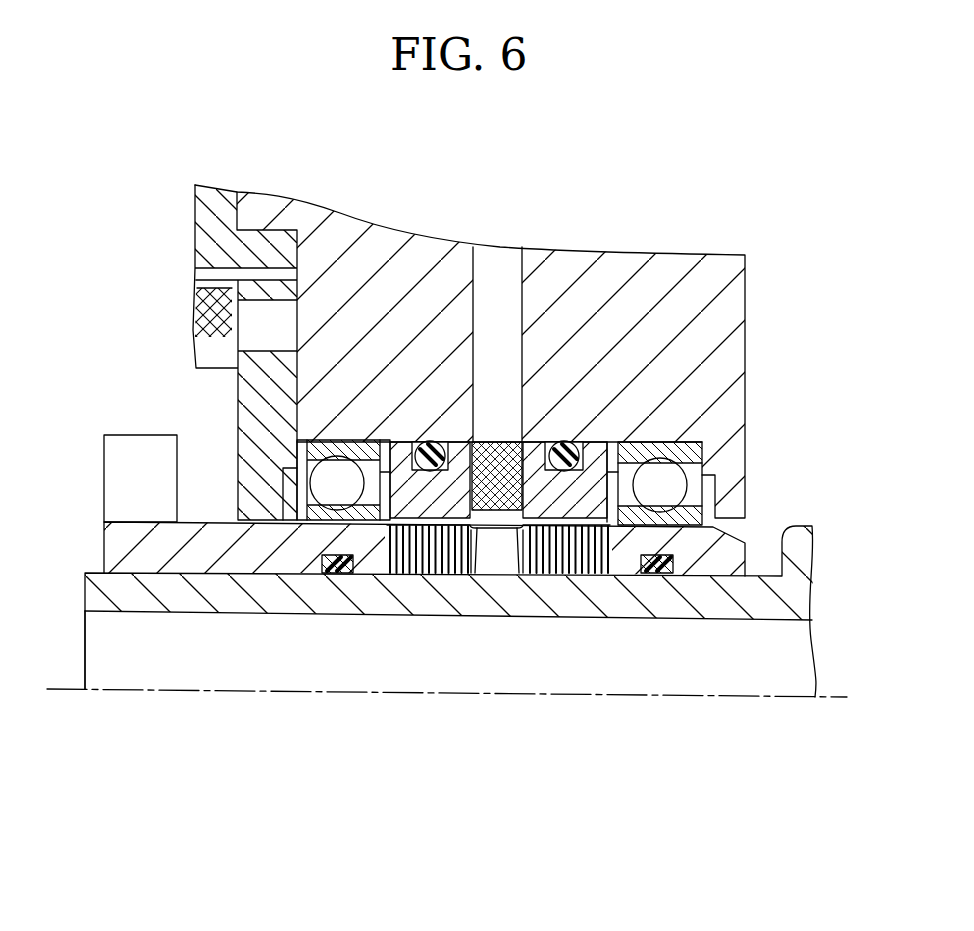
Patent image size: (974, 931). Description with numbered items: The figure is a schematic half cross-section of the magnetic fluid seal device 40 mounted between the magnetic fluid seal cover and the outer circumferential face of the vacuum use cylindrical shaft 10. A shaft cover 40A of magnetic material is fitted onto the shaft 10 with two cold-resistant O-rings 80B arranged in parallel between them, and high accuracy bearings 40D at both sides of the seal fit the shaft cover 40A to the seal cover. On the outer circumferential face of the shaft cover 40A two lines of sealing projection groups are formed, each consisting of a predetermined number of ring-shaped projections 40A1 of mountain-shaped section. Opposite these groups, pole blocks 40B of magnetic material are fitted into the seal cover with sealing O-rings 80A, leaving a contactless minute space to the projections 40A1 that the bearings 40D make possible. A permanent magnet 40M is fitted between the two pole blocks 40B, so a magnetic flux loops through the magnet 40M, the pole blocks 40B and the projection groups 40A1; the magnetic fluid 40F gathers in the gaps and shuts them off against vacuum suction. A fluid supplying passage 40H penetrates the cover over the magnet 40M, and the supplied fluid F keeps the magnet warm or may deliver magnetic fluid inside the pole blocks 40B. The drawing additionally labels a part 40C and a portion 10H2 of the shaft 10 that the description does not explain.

The vacuum use cylindrical shaft 10 is at (787, 590).
The hole of base member 10H2 is at (136, 592).
The magnetic fluid seal device 40 is at (557, 330).
The shaft cover 40A is at (217, 550).
The projections 40A1 is at (608, 560).
The pole blocks 40B is at (405, 470).
The bracket 40C is at (290, 388).
The bearings 40D is at (300, 442).
The magnetic fluid 40F is at (385, 528).
The fluid supplying passage 40H is at (512, 262).
The permanent magnet 40M is at (712, 425).
The O-rings 80A is at (565, 456).
The O-rings 80B is at (336, 566).
The supplied fluid F is at (497, 306).